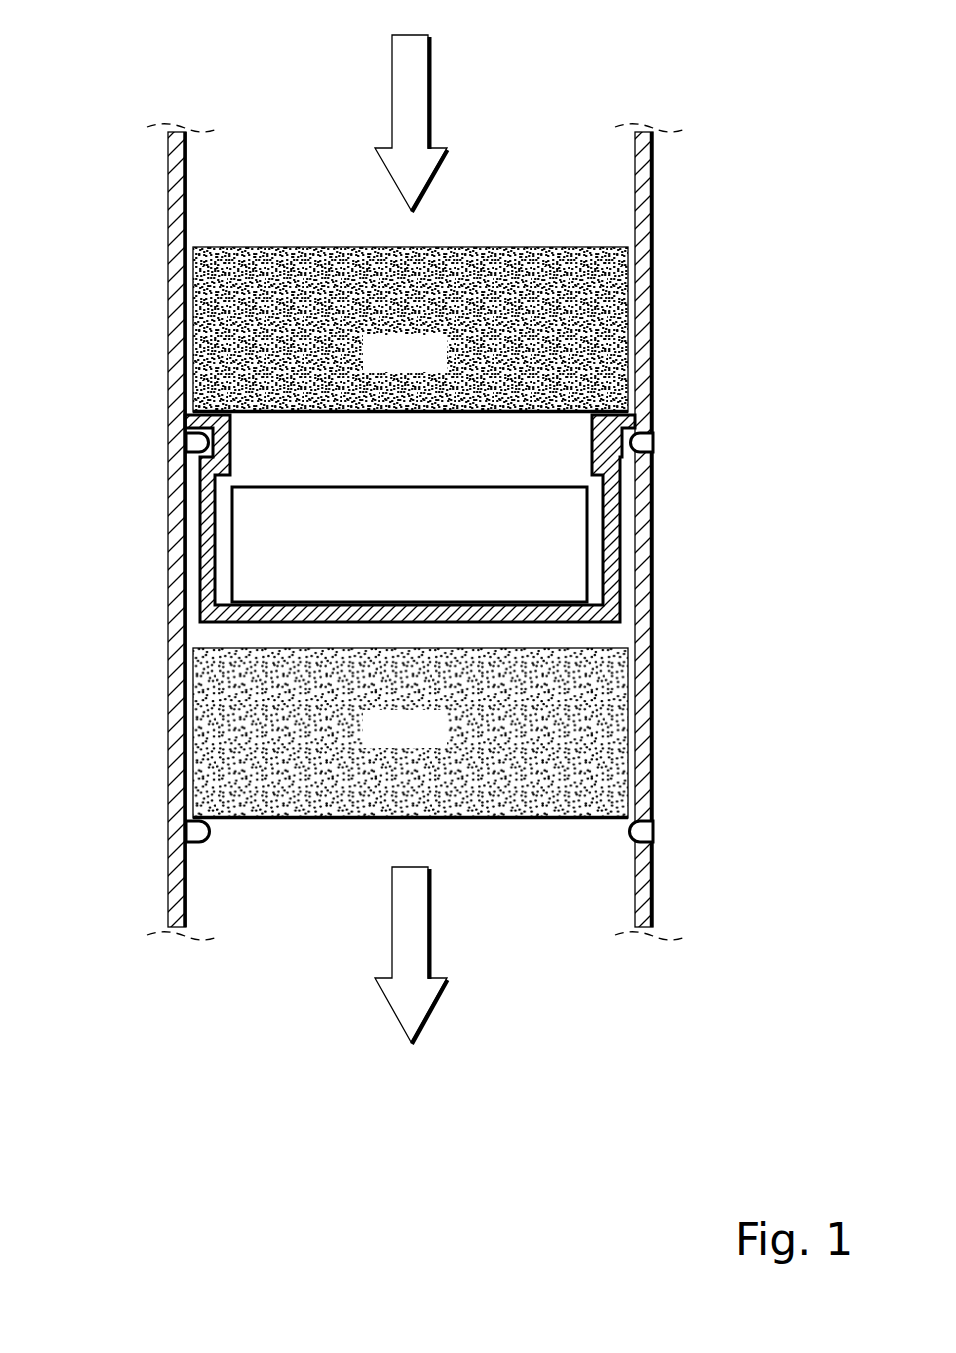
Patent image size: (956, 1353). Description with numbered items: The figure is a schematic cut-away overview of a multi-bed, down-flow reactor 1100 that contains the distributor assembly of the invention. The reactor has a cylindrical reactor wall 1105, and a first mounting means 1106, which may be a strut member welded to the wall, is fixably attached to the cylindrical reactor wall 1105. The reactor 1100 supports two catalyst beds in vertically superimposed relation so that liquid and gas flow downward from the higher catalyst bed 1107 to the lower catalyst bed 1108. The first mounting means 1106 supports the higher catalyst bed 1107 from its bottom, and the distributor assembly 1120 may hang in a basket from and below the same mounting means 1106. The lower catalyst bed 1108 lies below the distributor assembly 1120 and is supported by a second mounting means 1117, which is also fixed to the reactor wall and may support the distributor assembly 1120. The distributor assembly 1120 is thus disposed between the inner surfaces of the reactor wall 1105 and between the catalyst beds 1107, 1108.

The multi-bed, down-flow reactor 1100 is at (752, 82).
The cylindrical reactor wall 1105 is at (168, 185).
The first mounting means 1106 is at (192, 441).
The higher catalyst bed 1107 is at (436, 366).
The lower catalyst bed 1108 is at (436, 743).
The second mounting means 1117 is at (192, 832).
The distributor assembly 1120 is at (436, 581).